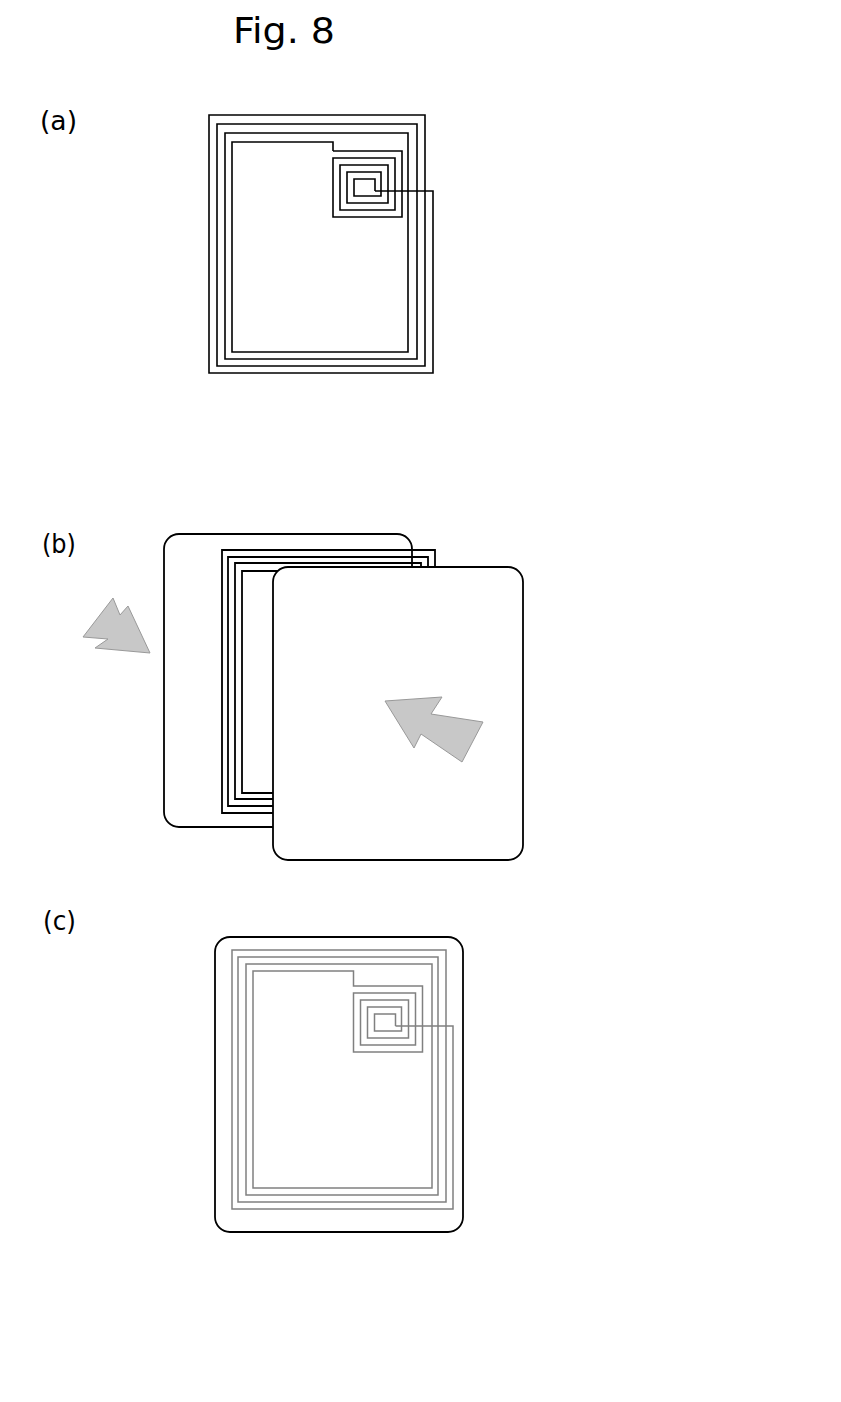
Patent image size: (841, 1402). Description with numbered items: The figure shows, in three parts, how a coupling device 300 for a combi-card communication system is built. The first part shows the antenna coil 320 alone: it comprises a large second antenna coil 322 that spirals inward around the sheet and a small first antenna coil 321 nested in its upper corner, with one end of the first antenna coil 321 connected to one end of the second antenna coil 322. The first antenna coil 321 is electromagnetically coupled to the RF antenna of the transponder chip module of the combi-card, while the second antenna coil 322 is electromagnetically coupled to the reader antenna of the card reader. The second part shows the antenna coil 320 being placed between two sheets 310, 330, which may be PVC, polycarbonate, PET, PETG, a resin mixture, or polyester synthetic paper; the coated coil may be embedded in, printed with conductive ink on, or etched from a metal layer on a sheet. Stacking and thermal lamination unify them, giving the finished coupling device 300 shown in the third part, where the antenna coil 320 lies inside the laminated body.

The coupling device 300 is at (361, 1269).
The sheet 310 is at (208, 541).
The antenna coil 320 is at (331, 635).
The first antenna coil 321 is at (347, 219).
The second antenna coil 322 is at (263, 115).
The sheet 330 is at (460, 579).